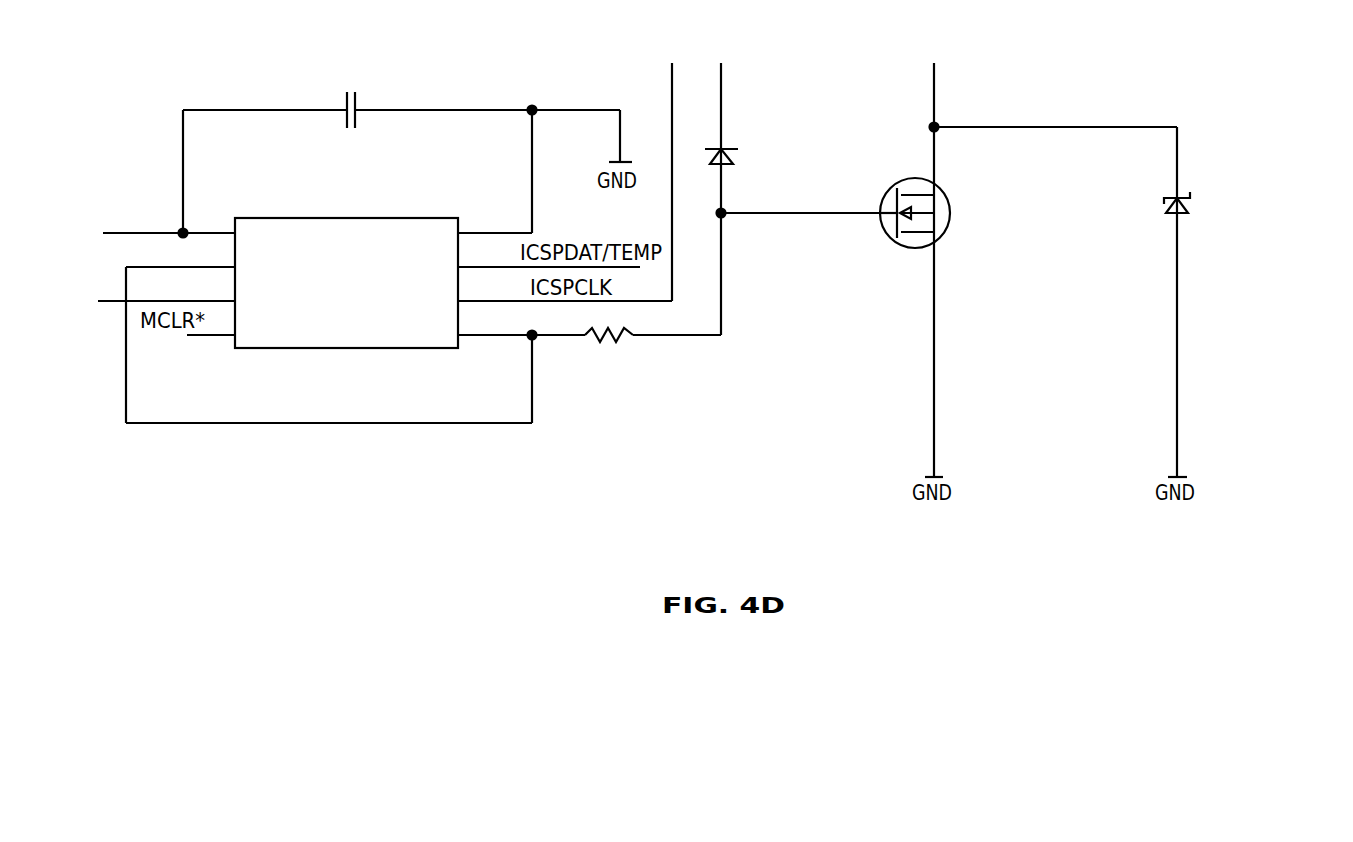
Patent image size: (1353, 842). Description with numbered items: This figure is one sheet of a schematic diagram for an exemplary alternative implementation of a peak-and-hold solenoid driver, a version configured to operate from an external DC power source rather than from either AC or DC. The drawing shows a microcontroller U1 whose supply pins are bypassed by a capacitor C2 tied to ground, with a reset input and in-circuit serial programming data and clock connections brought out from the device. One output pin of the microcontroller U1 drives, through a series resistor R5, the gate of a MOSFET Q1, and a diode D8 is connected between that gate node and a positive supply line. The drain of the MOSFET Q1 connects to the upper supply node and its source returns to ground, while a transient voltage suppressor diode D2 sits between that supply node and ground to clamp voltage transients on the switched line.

The capacitor 0.1uF 50V X7R C2 is at (401, 123).
The microcontroller PIC12F1822-I/SN U1 is at (349, 296).
The resistor 2.21K R5 is at (685, 353).
The diode IN4148WT D8 is at (797, 138).
The MOSFET BUK9275-100A Q1 is at (987, 270).
The TVS diode 60V 400W D2 is at (1241, 302).